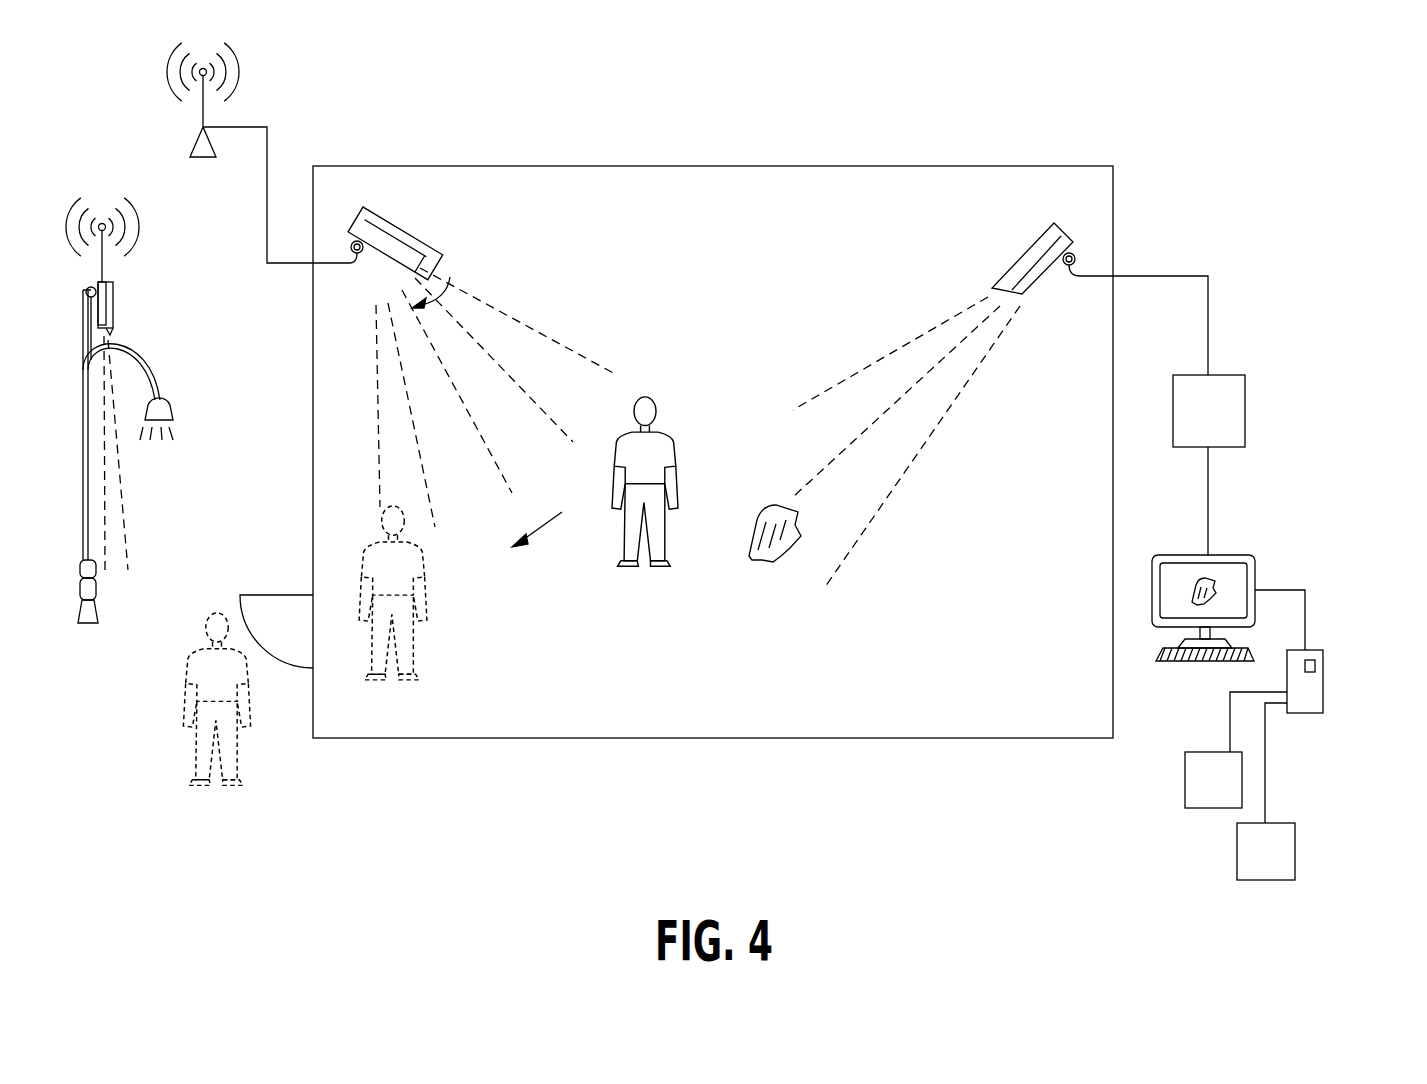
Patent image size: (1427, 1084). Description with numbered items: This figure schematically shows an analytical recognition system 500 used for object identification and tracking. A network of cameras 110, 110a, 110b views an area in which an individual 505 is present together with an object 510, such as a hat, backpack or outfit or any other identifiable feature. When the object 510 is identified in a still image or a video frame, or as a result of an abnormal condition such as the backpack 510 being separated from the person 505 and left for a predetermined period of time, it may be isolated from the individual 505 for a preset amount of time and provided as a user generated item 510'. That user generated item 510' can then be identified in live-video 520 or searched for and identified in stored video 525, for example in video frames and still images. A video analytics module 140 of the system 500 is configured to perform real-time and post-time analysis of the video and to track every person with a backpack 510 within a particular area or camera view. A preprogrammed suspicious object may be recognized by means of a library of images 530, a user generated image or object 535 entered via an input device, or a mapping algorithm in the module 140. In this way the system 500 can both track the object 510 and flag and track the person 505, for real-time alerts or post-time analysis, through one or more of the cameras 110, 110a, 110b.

The analytical recognition system 500 is at (968, 98).
The camera 110 is at (1043, 232).
The camera 110a is at (250, 125).
The camera 110b is at (113, 300).
The video analytics module 140 is at (1225, 375).
The individual 505 is at (675, 432).
The object 510 is at (750, 567).
The user generated item 510' is at (1179, 552).
The live-video 520 is at (1225, 555).
The stored video 525 is at (1318, 664).
The library of images 530 is at (1185, 781).
The user generated image/object 535 is at (1237, 851).